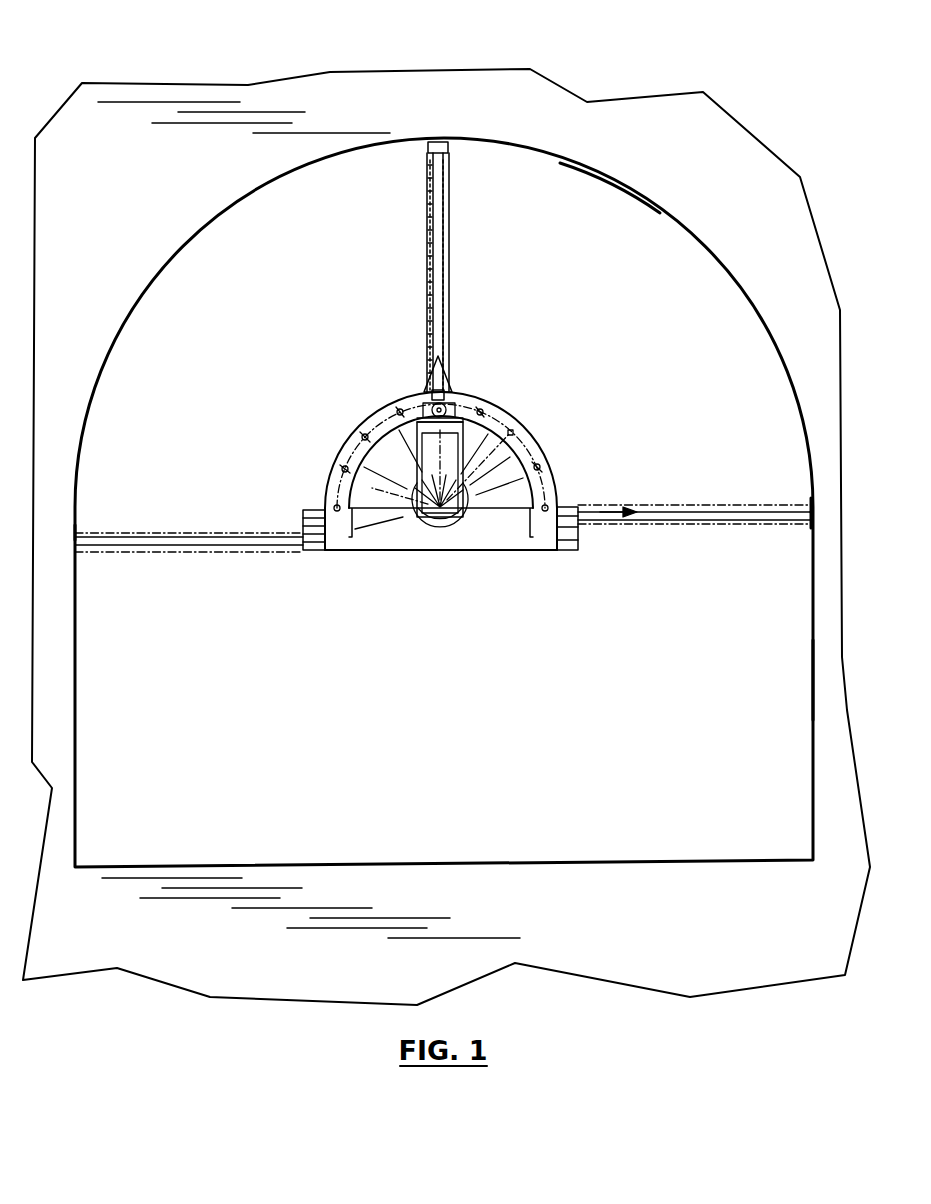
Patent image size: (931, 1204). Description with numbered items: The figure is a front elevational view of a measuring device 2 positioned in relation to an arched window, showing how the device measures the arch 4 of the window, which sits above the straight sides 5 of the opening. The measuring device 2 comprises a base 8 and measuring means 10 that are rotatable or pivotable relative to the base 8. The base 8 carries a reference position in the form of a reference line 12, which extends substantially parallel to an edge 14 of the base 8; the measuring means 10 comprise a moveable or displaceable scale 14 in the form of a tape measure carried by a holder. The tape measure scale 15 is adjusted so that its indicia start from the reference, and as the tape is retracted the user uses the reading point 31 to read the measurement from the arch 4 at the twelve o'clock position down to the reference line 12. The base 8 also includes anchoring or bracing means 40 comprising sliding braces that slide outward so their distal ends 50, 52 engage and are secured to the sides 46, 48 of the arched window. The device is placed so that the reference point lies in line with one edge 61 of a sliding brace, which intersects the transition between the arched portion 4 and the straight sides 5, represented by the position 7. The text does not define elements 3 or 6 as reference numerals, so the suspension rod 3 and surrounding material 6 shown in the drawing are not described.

The measuring device 2 is at (483, 378).
The suspension shaft 3 is at (427, 158).
The arch 4 is at (611, 177).
The straight sides 5 is at (811, 680).
The rock mass 6 is at (158, 219).
The position 7 is at (811, 515).
The base 8 is at (492, 536).
The measuring means 10 is at (479, 445).
The reference position 12 is at (447, 530).
The scale 14 is at (438, 236).
The tape measure scale 15 is at (438, 192).
The reading point 31 is at (437, 360).
The anchoring or bracing means 40 is at (665, 515).
The side of the arched window 46 is at (811, 498).
The side of the arched window 48 is at (76, 533).
The distal end 50 is at (807, 527).
The distal end 52 is at (76, 553).
The edge of the sliding brace 61 is at (651, 505).